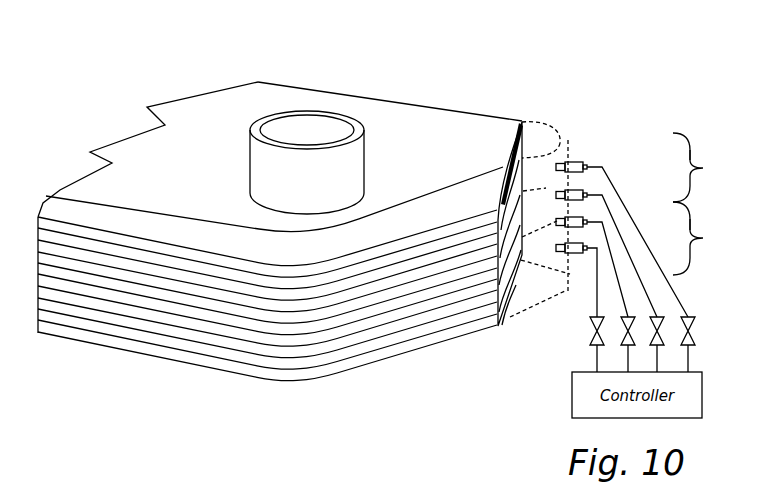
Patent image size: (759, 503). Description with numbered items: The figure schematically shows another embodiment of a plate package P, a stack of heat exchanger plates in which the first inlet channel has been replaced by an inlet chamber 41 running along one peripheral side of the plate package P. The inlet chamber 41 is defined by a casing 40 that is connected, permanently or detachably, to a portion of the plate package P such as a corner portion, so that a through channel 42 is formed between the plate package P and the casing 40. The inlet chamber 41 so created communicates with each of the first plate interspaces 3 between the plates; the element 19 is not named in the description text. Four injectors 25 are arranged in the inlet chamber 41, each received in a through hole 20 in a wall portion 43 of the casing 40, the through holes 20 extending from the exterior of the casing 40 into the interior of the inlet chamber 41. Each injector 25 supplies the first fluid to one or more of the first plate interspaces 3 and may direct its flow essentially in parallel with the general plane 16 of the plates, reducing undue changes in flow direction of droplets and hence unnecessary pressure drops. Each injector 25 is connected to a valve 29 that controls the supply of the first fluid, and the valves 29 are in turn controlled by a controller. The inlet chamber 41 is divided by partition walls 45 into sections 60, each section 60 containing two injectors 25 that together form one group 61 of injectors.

The layered formation block 19 is at (306, 363).
The first plate interspace 3 is at (498, 312).
The general plane 16 is at (508, 140).
The through channel 42 is at (530, 140).
The inlet chamber 41 is at (546, 140).
The casing 40 is at (568, 140).
The wall portion 43 is at (571, 143).
The injector 25 is at (568, 268).
The through hole 20 is at (572, 160).
The partition wall 45 is at (546, 188).
The valve 29 is at (592, 330).
The section 60 is at (705, 204).
The group of injectors 61 is at (710, 208).
The plate package P is at (386, 72).